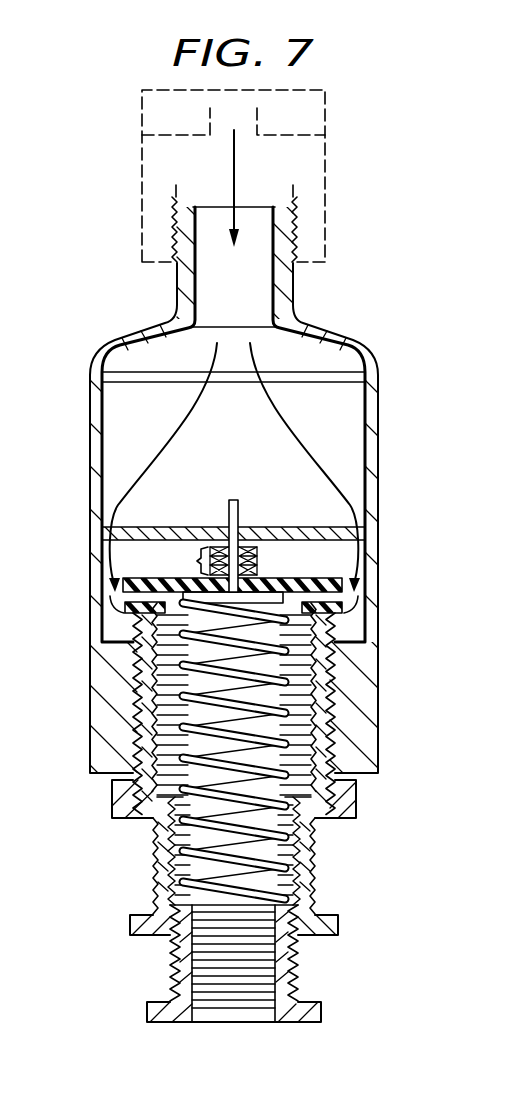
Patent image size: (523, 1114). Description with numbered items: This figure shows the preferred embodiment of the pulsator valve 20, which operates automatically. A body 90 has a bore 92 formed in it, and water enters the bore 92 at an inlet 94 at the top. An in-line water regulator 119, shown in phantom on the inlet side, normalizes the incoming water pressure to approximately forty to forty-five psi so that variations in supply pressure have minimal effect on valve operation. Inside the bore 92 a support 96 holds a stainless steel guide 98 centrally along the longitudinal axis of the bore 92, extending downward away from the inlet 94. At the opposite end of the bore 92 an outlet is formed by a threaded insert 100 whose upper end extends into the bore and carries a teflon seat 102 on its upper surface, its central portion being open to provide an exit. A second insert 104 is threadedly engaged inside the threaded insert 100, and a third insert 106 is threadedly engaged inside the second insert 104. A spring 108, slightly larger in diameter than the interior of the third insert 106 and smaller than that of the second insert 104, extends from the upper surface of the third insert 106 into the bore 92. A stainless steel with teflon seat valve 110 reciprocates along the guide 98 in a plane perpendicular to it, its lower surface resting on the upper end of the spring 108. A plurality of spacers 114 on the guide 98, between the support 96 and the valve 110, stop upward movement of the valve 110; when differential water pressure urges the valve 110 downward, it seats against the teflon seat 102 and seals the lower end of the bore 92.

The pulsator valve 20 is at (362, 300).
The body 90 is at (372, 417).
The bore 92 is at (133, 358).
The inlet 94 is at (265, 213).
The support 96 is at (282, 535).
The stainless steel guide 98 is at (232, 502).
The threaded insert 100 is at (356, 798).
The teflon seat 102 is at (357, 606).
The second insert 104 is at (315, 882).
The third insert 106 is at (293, 967).
The spring 108 is at (161, 850).
The stainless steel with teflon seat valve 110 is at (288, 586).
The spacers 114 is at (198, 557).
The in-line water regulator 119 is at (318, 180).